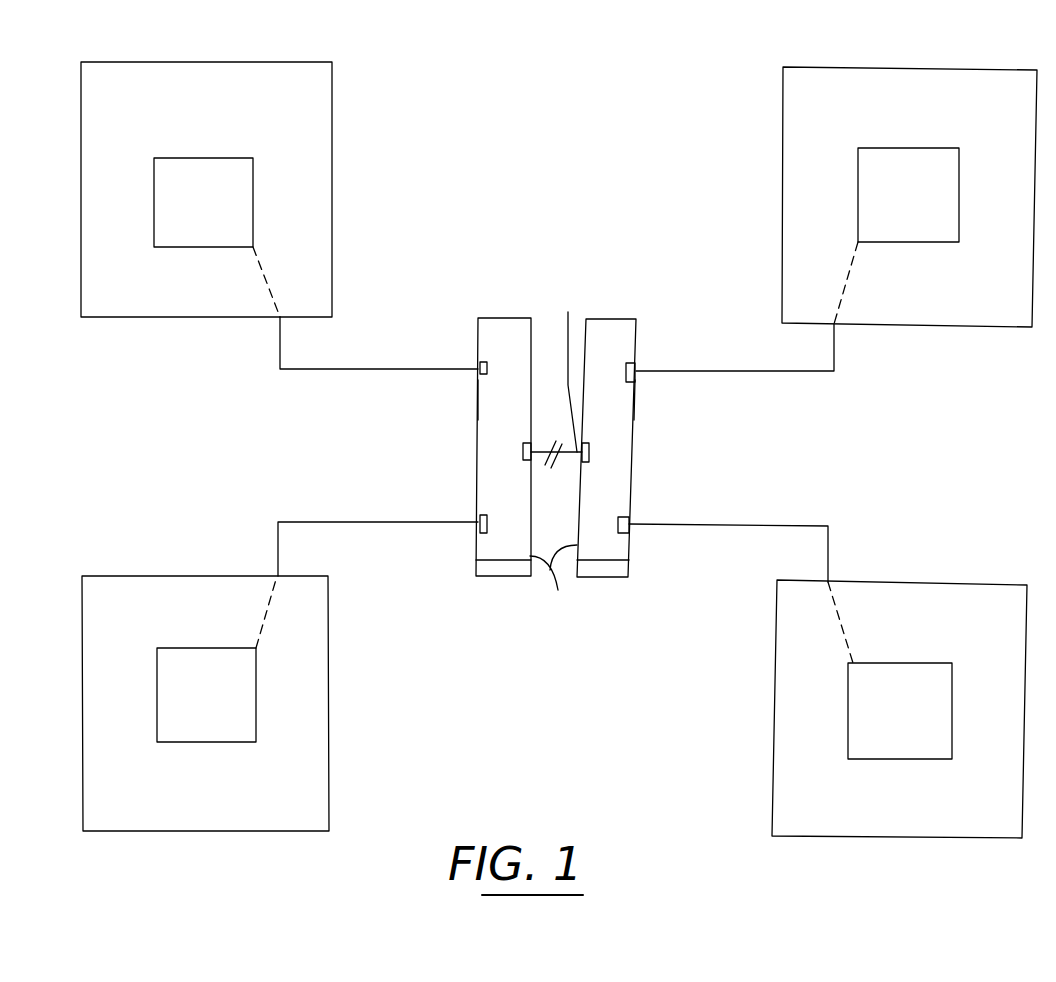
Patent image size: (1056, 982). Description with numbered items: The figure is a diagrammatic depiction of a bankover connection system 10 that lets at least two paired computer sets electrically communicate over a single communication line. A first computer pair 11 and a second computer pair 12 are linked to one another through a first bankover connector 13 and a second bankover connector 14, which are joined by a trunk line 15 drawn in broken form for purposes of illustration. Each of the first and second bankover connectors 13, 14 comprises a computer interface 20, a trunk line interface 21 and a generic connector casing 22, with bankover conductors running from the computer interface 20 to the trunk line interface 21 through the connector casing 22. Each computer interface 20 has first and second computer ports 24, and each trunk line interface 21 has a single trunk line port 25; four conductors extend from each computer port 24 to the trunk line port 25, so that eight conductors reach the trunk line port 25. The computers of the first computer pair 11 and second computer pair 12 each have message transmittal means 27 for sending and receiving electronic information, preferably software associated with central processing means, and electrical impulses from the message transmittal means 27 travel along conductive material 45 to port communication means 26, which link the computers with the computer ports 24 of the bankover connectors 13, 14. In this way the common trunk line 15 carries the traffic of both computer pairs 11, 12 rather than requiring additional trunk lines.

The bankover connection system 10 is at (553, 118).
The first computer pair 11 is at (81, 62).
The second computer pair 12 is at (83, 831).
The first bankover connector 13 is at (479, 318).
The second bankover connector 14 is at (636, 319).
The trunk line 15 is at (567, 366).
The computer interface 20 is at (478, 400).
The trunk line interface 21 is at (553, 584).
The connector casing 22 is at (498, 557).
The computer ports 24 is at (480, 364).
The trunk line port 25 is at (523, 452).
The port communication means 26 is at (320, 370).
The message transmittal means 27 is at (556, 453).
The conductive material 45 is at (272, 292).